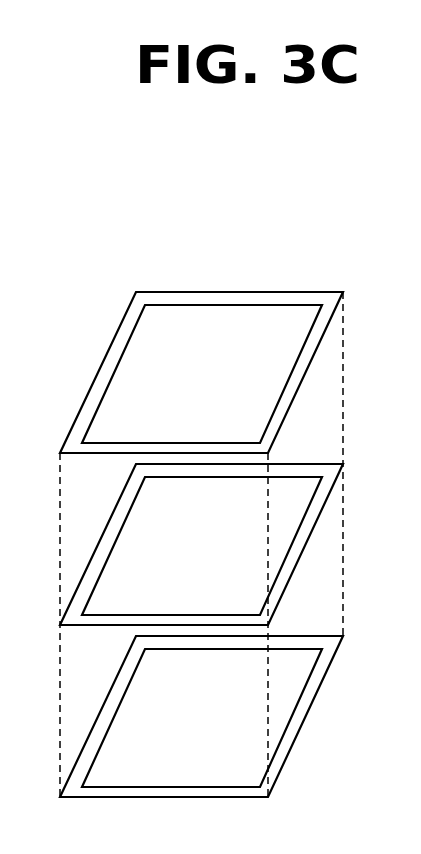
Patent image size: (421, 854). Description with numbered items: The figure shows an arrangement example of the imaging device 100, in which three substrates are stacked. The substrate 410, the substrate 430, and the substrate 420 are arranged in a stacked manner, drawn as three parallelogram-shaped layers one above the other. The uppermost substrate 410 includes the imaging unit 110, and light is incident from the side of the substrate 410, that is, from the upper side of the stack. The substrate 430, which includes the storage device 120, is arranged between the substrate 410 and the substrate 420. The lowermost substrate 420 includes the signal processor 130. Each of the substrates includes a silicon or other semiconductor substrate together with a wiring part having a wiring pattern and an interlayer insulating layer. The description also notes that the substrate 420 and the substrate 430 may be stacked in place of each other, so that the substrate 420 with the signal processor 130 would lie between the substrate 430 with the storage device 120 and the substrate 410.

The imaging device 100 is at (273, 224).
The imaging unit 110 is at (194, 320).
The storage device 120 is at (280, 545).
The signal processor 130 is at (280, 715).
The substrate 410 is at (318, 348).
The substrate 420 is at (318, 693).
The substrate 430 is at (317, 520).